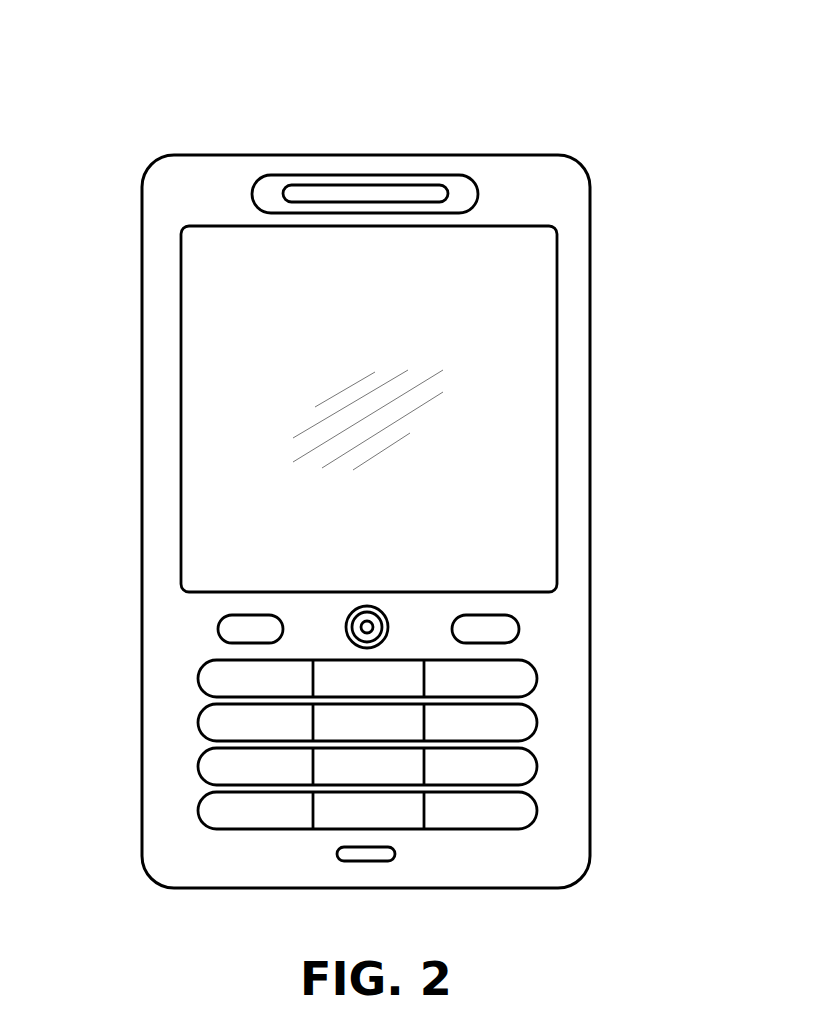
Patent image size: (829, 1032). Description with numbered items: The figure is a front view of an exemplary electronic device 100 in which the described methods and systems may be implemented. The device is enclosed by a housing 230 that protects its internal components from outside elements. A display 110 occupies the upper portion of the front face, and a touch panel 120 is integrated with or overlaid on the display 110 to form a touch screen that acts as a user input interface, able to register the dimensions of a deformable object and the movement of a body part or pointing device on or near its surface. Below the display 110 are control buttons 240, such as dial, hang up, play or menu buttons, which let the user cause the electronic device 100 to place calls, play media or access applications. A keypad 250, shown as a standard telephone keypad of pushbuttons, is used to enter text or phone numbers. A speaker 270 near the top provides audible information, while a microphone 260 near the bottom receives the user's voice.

The electronic device 100 is at (172, 60).
The display 110 is at (566, 463).
The touch panel 120 is at (527, 363).
The housing 230 is at (142, 205).
The control buttons 240 is at (537, 610).
The keypad 250 is at (553, 815).
The microphone 260 is at (365, 860).
The speaker 270 is at (478, 190).